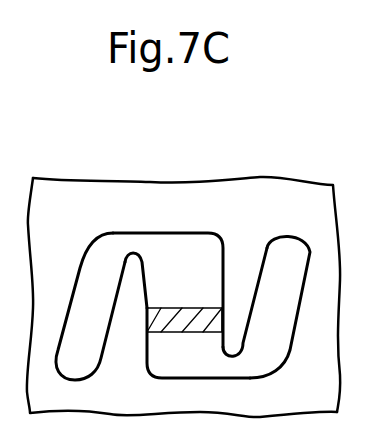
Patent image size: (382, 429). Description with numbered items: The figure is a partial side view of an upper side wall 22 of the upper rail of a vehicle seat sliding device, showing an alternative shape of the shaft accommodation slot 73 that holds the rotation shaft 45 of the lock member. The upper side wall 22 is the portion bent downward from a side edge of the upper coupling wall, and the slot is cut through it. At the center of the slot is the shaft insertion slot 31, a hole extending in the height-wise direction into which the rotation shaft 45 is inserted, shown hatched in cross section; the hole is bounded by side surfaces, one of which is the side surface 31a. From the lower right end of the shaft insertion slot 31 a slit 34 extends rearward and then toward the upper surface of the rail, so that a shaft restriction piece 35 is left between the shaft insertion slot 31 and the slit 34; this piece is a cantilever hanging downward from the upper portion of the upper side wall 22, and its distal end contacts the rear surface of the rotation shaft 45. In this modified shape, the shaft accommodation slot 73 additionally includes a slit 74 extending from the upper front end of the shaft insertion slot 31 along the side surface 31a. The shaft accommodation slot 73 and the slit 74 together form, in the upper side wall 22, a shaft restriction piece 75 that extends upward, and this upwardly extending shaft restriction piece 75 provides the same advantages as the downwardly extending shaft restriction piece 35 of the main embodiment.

The upper side wall 22 is at (303, 190).
The shaft accommodation slot 73 is at (90, 195).
The slit 74 is at (70, 276).
The shaft restriction piece 75 is at (131, 263).
The shaft insertion slot 31 is at (186, 238).
The side surface 31a is at (144, 290).
The rotation shaft 45 is at (188, 306).
The shaft restriction piece 35 is at (235, 346).
The slit 34 is at (285, 349).